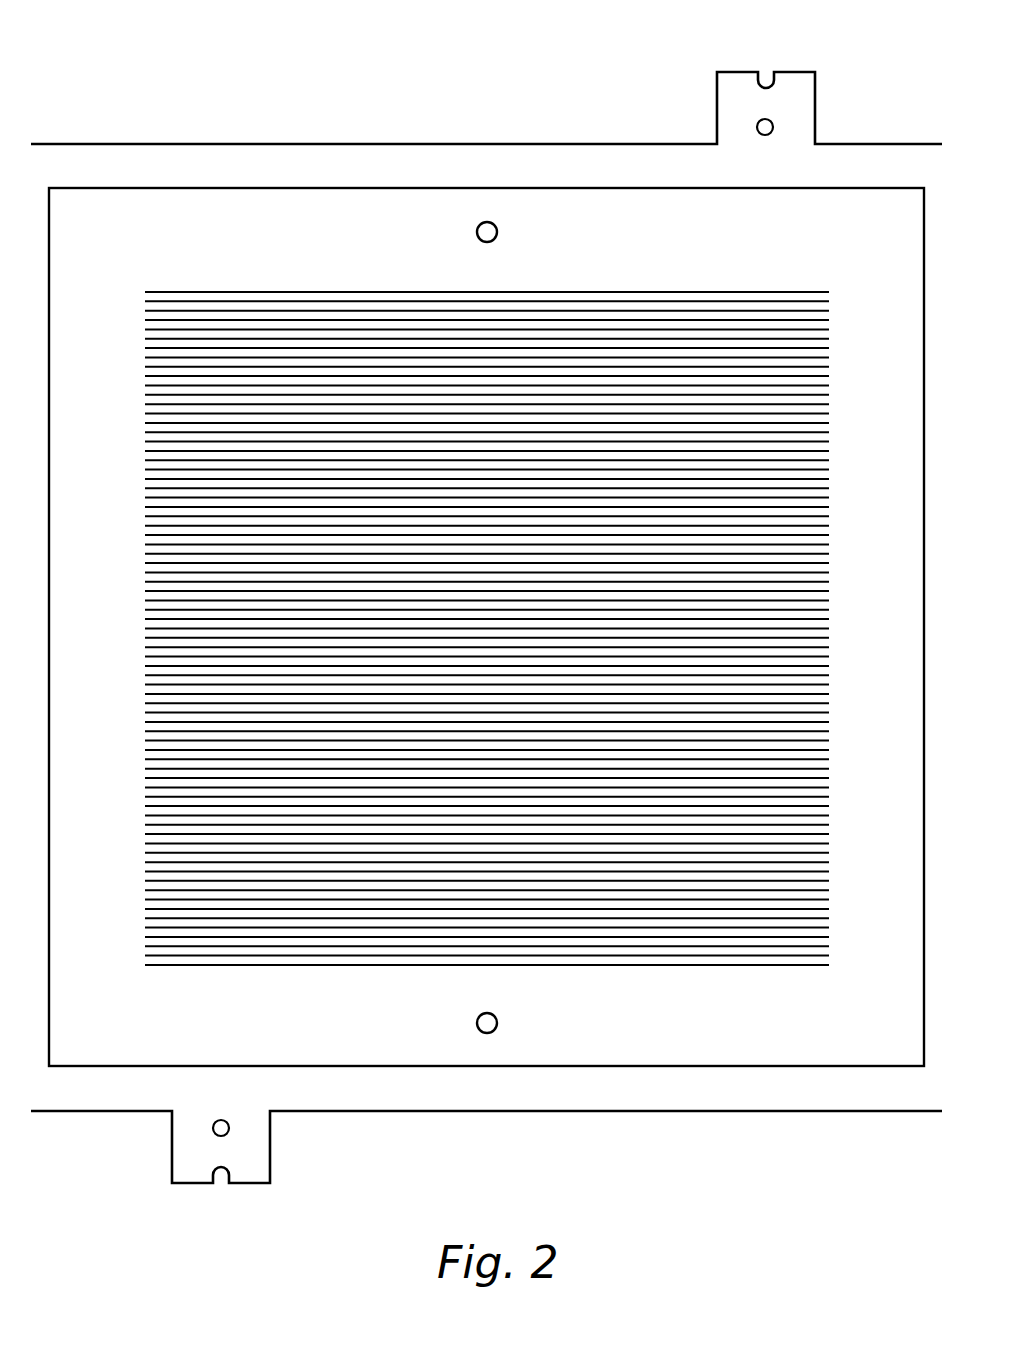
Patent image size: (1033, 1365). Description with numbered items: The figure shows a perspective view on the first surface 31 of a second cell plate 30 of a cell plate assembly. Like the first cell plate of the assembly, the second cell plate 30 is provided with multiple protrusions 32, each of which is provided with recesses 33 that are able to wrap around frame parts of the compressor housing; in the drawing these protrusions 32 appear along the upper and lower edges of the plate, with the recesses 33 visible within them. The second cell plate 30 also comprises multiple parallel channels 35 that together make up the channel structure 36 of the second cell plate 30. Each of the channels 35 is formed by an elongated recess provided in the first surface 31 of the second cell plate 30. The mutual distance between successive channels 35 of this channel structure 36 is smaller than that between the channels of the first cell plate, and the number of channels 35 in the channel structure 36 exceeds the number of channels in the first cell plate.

The second cell plate 30 is at (486, 627).
The first surface 31 is at (874, 236).
The protrusions 32 is at (727, 100).
The recesses 33 is at (766, 71).
The channels 35 is at (148, 320).
The channel structure 36 is at (446, 628).